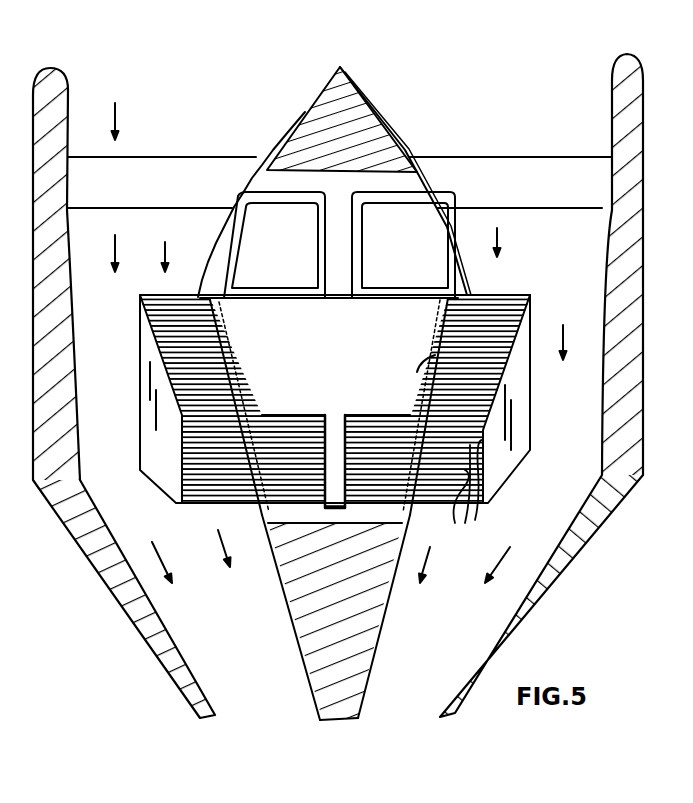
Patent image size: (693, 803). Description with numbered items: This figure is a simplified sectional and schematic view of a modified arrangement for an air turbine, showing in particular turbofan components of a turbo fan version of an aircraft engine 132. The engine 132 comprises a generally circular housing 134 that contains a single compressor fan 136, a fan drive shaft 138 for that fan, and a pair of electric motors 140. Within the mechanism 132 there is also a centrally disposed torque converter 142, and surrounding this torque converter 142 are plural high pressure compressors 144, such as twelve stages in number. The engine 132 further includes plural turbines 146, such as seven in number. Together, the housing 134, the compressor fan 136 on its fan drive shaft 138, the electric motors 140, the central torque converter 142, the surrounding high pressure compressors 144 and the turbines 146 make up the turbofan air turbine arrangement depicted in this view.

The aircraft engine 132 is at (338, 386).
The generally circular housing 134 is at (575, 562).
The compressor fan 136 is at (549, 157).
The fan drive shaft 138 is at (400, 177).
The electric motors 140 is at (448, 208).
The torque converter 142 is at (535, 313).
The high pressure compressors 144 is at (497, 296).
The turbines 146 is at (467, 494).